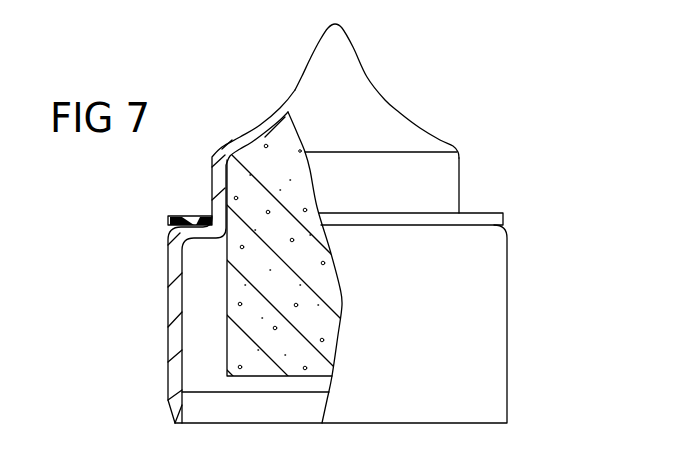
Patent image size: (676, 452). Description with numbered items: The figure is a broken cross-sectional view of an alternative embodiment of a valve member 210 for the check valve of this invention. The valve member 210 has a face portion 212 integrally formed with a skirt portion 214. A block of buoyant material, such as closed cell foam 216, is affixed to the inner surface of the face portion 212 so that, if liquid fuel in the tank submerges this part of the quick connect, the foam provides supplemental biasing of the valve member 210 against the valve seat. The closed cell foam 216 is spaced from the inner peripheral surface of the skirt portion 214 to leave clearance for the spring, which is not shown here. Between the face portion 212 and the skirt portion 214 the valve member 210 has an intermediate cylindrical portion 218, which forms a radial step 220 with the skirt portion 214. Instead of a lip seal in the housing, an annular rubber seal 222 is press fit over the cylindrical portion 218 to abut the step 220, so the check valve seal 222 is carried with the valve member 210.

The valve member 210 is at (232, 81).
The face portion 212 is at (337, 42).
The skirt portion 214 is at (172, 331).
The closed cell foam 216 is at (244, 377).
The cylindrical portion 218 is at (459, 183).
The radial step 220 is at (503, 226).
The annular rubber seal 222 is at (166, 215).